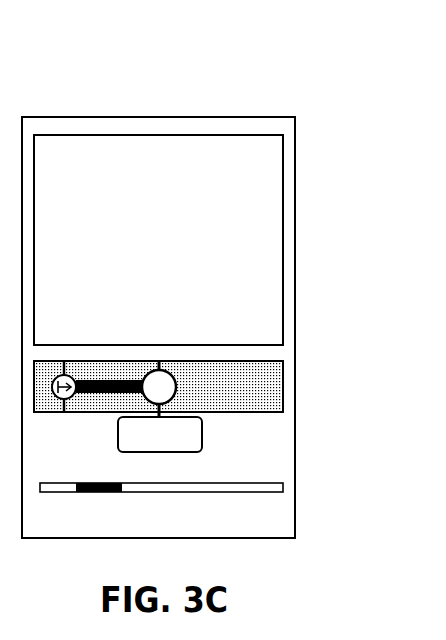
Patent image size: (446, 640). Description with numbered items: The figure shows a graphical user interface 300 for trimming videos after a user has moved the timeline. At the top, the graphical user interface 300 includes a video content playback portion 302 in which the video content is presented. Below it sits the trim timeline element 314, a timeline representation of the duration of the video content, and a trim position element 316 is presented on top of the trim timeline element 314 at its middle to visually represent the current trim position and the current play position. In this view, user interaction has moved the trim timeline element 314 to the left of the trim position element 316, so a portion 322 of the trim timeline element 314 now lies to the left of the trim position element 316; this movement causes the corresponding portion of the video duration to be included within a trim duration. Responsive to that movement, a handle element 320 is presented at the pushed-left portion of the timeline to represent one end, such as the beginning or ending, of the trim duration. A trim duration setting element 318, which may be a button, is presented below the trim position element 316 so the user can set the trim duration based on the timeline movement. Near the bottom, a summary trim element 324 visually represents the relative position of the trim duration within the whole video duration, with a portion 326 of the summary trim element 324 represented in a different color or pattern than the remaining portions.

The graphical user interface 300 is at (218, 118).
The video content playback portion 302 is at (252, 232).
The trim timeline element 314 is at (262, 387).
The trim position element 316 is at (160, 367).
The trim duration setting element 318 is at (174, 392).
The handle element 320 is at (63, 373).
The portion of the trim timeline element 322 is at (122, 378).
The summary trim element 324 is at (255, 492).
The portion of the summary trim element 326 is at (112, 492).